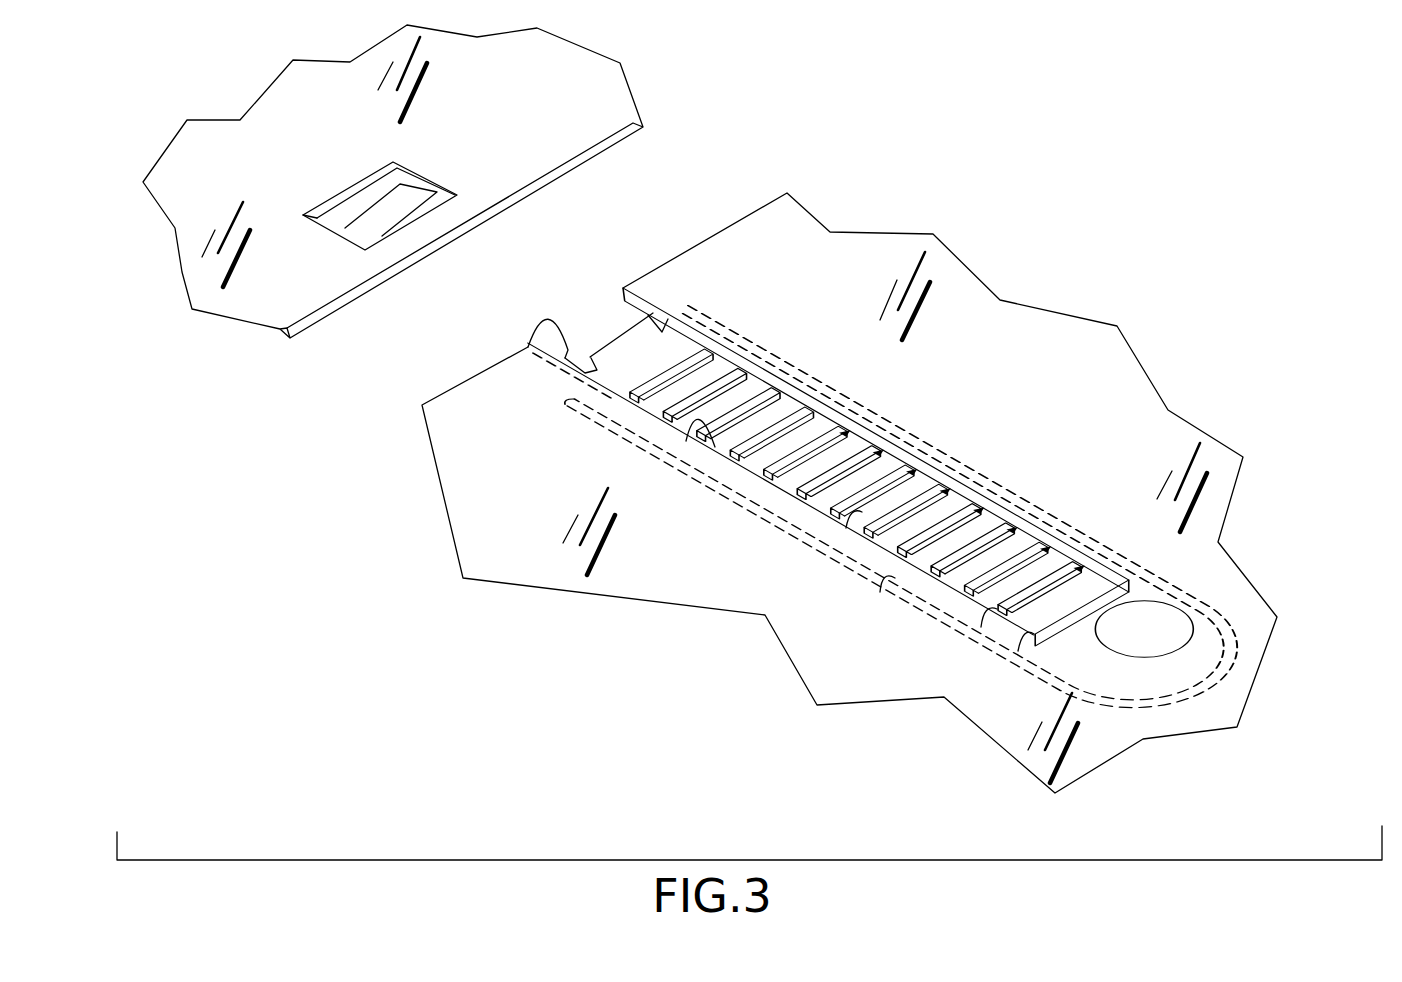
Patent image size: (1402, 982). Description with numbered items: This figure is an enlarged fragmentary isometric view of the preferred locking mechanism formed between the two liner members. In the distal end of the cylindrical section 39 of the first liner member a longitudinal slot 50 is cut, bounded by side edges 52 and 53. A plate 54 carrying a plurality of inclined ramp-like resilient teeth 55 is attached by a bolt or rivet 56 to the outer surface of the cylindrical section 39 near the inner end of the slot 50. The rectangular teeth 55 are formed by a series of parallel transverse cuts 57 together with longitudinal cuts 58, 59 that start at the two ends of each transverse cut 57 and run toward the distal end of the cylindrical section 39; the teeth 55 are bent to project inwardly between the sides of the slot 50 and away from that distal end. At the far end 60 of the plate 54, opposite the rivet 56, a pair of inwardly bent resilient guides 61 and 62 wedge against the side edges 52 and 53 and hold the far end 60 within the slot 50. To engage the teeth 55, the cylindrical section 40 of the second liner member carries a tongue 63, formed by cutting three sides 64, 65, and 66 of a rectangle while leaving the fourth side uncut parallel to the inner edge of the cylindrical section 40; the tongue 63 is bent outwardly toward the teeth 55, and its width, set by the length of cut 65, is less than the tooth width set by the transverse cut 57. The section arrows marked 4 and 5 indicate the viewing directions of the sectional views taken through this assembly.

The cylindrical section 39 is at (890, 210).
The cylindrical section 40 is at (495, 120).
The longitudinal slot 50 is at (945, 457).
The side edge 52 is at (806, 408).
The side edge 53 is at (687, 433).
The plate 54 is at (1029, 665).
The resilient teeth 55 is at (943, 458).
The bolt or rivet 56 is at (1177, 603).
The transverse cut 57 is at (890, 560).
The longitudinal cut 58 is at (733, 372).
The longitudinal cut 59 is at (660, 418).
The far end 60 is at (615, 343).
The resilient guide 61 is at (650, 316).
The resilient guide 62 is at (538, 352).
The tongue 63 is at (410, 200).
The cut side 64 is at (407, 173).
The cut side 65 is at (352, 183).
The cut side 66 is at (312, 223).
The section line 4 is at (337, 165).
The section line 5 is at (793, 347).